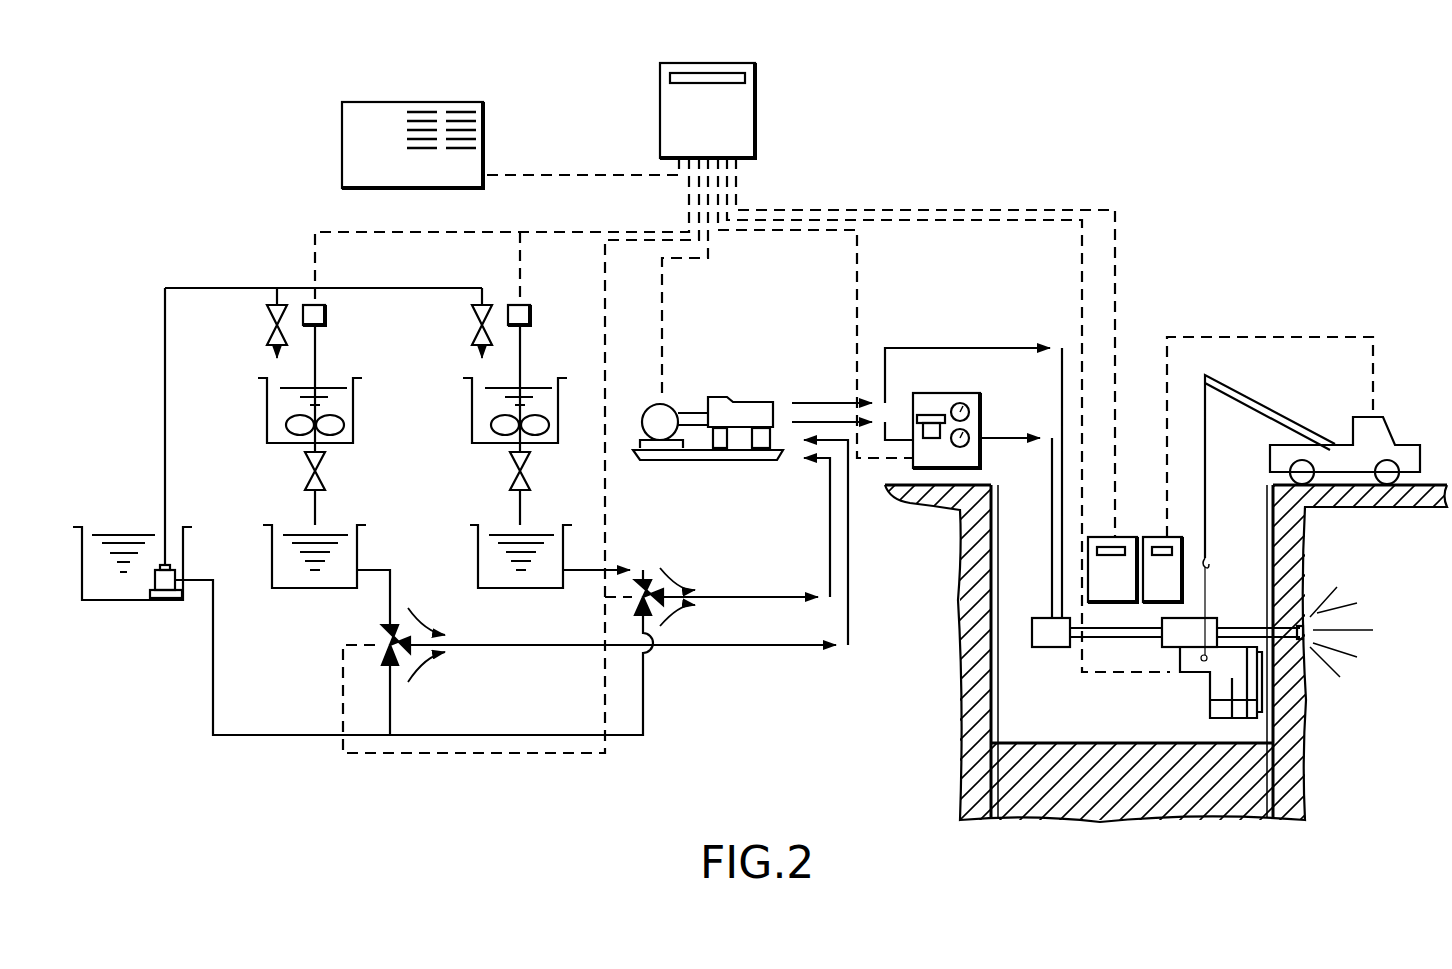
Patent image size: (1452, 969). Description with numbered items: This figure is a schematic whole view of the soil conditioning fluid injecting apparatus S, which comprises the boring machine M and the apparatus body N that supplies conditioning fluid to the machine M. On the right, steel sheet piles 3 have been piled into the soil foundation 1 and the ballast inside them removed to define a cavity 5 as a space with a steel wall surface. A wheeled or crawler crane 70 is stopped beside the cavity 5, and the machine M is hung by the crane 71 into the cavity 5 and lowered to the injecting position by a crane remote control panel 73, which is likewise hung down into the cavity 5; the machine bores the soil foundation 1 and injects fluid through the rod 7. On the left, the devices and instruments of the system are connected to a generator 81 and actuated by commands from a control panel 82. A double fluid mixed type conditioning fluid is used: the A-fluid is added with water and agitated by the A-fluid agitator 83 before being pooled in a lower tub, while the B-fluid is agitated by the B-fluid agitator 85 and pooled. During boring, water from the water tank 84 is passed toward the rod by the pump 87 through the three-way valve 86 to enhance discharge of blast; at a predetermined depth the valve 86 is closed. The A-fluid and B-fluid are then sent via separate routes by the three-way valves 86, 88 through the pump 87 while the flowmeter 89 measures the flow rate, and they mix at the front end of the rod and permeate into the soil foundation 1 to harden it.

The soil foundation 1 is at (1283, 546).
The steel sheet piles 3 is at (992, 700).
The cavity 5 is at (1236, 533).
The rod 7 is at (1120, 640).
The boring machine M is at (1162, 683).
The apparatus body N is at (246, 210).
The apparatus for injecting a conditioning fluid S is at (1014, 130).
The wheeled crane or crawler crane 70 is at (1342, 453).
The crane 71 is at (1228, 387).
The crane remote control panel 73 is at (1170, 585).
The generator 81 is at (378, 102).
The control panel 82 is at (757, 110).
The A-fluid agitator 83 is at (284, 497).
The water tank 84 is at (103, 530).
The B-fluid agitator 85 is at (506, 502).
The three-way valve 86 is at (382, 633).
The pump 87 is at (730, 400).
The three-way valve 88 is at (635, 607).
The flowmeter 89 is at (982, 415).